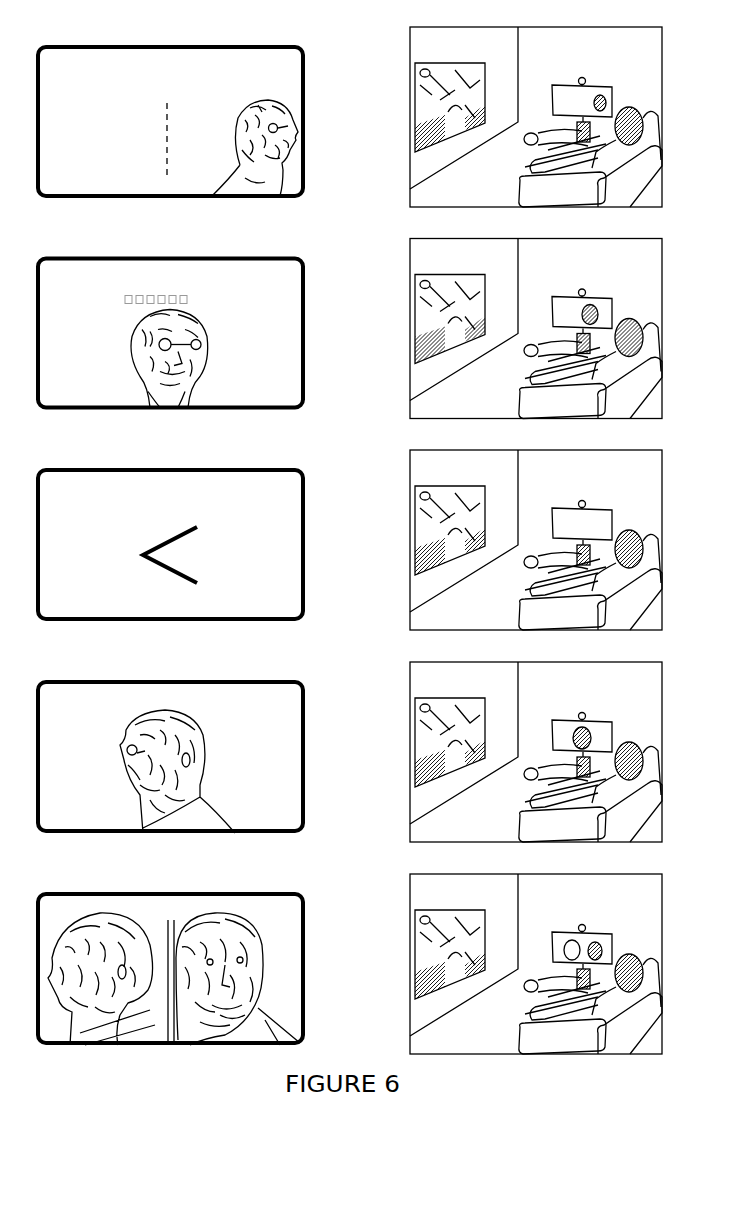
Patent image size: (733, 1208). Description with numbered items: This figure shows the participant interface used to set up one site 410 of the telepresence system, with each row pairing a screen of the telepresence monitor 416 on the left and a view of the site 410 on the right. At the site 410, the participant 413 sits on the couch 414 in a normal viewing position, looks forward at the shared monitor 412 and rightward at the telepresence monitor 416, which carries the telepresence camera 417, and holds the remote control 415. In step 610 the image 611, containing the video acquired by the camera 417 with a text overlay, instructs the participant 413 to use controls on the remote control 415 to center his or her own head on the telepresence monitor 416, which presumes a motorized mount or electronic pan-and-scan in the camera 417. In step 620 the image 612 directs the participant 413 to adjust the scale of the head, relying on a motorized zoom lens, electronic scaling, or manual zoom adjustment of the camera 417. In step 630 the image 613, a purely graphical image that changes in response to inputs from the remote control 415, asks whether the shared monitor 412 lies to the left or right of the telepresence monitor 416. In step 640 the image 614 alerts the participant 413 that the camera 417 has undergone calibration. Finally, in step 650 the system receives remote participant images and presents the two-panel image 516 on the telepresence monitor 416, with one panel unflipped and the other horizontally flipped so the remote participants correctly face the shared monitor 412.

The site 410 is at (504, 540).
The shared monitor 412 is at (460, 519).
The participant 413 is at (575, 563).
The couch 414 is at (566, 582).
The remote control 415 is at (556, 542).
The telepresence monitor 416 is at (325, 535).
The telepresence camera 417 is at (613, 492).
The image 516 is at (167, 974).
The step 610 is at (175, 143).
The image 611 is at (80, 183).
The image 612 is at (66, 388).
The image 613 is at (66, 600).
The image 614 is at (66, 812).
The step 620 is at (170, 356).
The step 630 is at (160, 568).
The step 640 is at (144, 780).
The step 650 is at (174, 990).